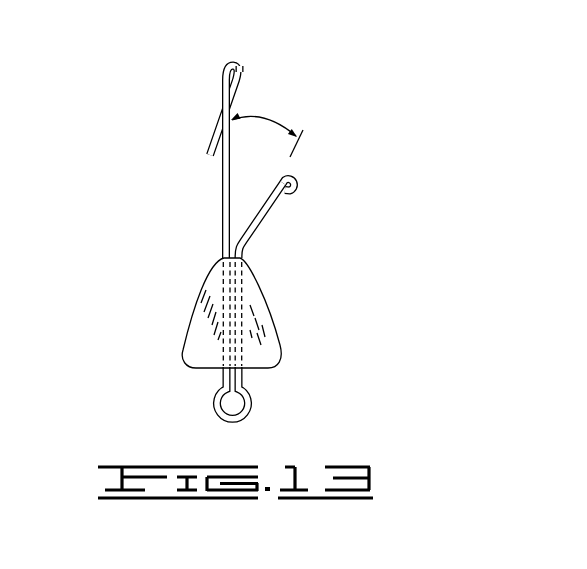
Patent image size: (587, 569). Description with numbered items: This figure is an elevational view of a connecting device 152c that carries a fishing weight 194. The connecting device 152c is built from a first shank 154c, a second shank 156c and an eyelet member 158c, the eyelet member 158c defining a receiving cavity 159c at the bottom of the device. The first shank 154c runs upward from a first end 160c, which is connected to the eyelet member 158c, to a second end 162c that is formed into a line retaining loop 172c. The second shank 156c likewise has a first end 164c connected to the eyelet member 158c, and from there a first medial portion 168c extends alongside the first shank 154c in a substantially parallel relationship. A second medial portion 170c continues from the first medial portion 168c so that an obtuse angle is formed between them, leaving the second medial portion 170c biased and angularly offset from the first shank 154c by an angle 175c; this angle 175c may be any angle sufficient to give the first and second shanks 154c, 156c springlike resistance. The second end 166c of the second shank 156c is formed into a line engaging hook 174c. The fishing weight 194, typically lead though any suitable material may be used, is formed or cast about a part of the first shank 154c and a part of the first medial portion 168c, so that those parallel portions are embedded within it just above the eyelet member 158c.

The connecting device 152c is at (124, 125).
The first shank 154c is at (222, 193).
The second shank 156c is at (262, 223).
The eyelet member 158c is at (252, 423).
The receiving cavity 159c is at (228, 403).
The first end of the first shank 160c is at (221, 381).
The second end of the first shank 162c is at (245, 64).
The first end of the second shank 164c is at (243, 376).
The second end of the second shank 166c is at (290, 170).
The first medial portion 168c is at (242, 300).
The second medial portion 170c is at (263, 208).
The line retaining loop 172c is at (222, 58).
The line engaging hook 174c is at (304, 177).
The angle 175c is at (265, 128).
The fishing weight 194 is at (187, 328).